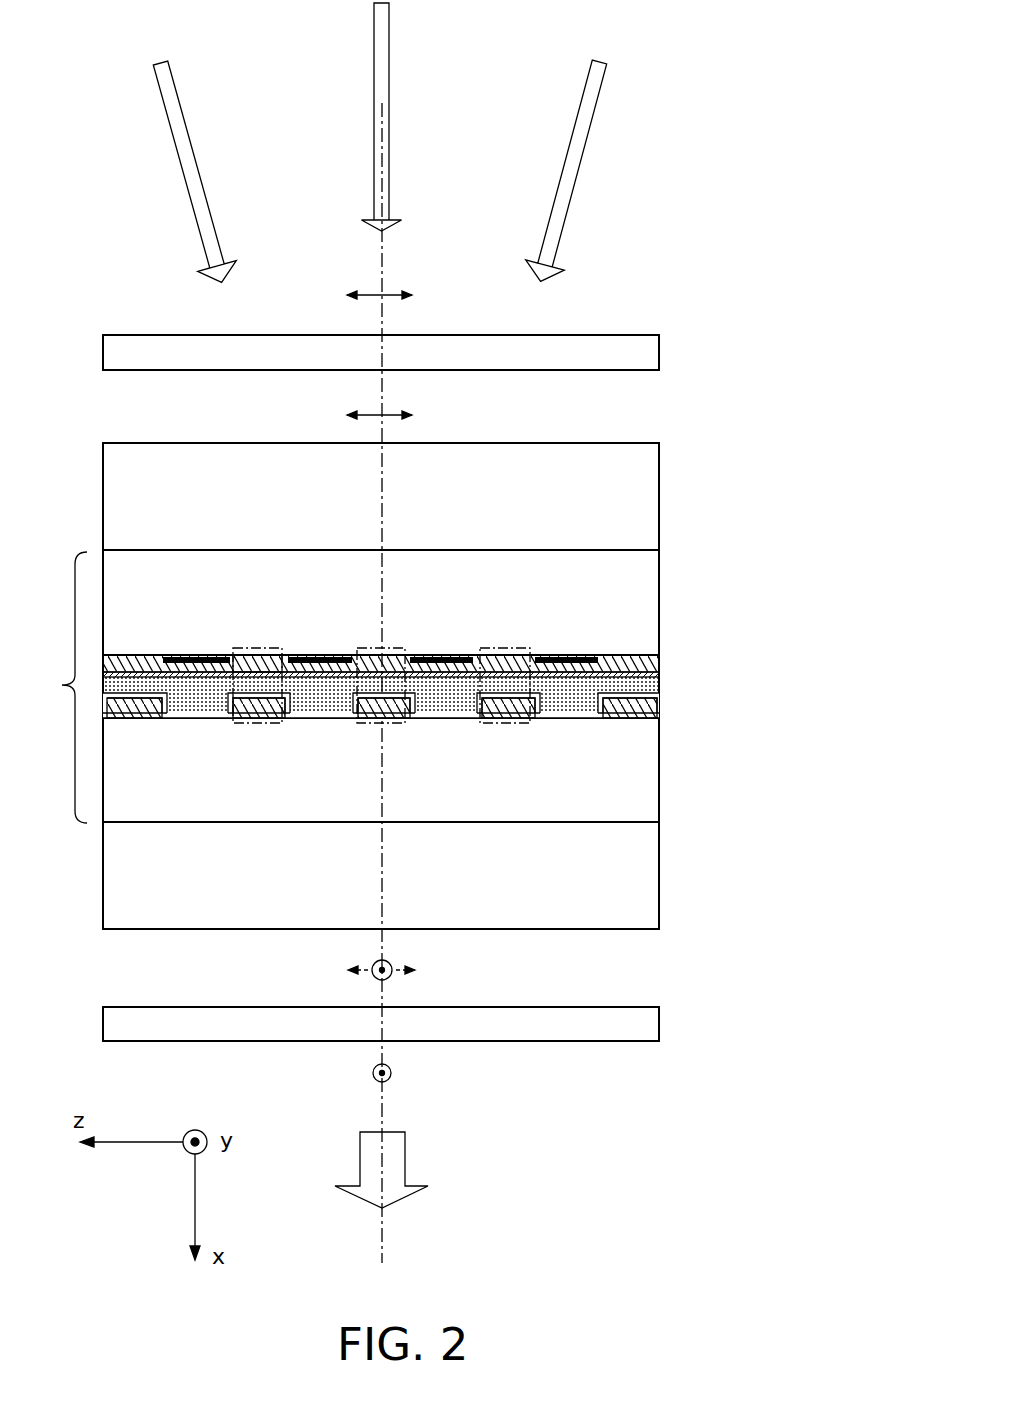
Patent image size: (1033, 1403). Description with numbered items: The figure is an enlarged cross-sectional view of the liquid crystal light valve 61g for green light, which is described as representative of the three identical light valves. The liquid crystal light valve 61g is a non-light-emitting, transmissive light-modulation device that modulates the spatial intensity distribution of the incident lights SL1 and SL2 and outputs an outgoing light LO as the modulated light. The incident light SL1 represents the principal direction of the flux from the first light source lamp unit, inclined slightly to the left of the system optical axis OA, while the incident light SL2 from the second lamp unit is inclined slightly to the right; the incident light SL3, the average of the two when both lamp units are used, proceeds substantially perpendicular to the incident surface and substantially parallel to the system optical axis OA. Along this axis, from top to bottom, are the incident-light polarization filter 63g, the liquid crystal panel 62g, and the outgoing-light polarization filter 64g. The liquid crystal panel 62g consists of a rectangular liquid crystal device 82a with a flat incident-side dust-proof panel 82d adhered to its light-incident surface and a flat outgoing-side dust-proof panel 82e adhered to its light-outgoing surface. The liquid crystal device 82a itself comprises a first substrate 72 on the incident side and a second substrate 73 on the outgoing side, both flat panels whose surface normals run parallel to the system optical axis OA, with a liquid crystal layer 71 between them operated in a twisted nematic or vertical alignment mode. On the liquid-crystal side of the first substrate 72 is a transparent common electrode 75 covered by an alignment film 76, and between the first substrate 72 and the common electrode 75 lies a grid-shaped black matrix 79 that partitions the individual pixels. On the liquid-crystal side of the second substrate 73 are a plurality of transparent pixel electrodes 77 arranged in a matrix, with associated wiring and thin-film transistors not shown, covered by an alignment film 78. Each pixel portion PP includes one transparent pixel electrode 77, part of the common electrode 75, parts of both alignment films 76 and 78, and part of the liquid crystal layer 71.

The incident light SL1 is at (190, 138).
The incident light SL2 is at (571, 138).
The incident light SL3 is at (389, 38).
The system optical axis OA is at (382, 255).
The liquid crystal light valve 61g is at (855, 120).
The incident-light polarization filter 63g is at (660, 350).
The incident-side dust-proof panel 82d is at (660, 500).
The liquid crystal panel 62g is at (748, 541).
The first substrate 72 is at (660, 607).
The common electrode 75 is at (660, 662).
The black matrix 79 is at (570, 653).
The liquid crystal layer 71 is at (660, 685).
The second substrate 73 is at (660, 768).
The outgoing-side dust-proof panel 82e is at (660, 871).
The outgoing-light polarization filter 64g is at (660, 1021).
The alignment film 76 is at (260, 652).
The transparent pixel electrodes 77 is at (392, 720).
The alignment film 78 is at (320, 720).
The pixel portions PP is at (257, 723).
The liquid crystal device 82a is at (48, 687).
The outgoing light LO is at (405, 1157).